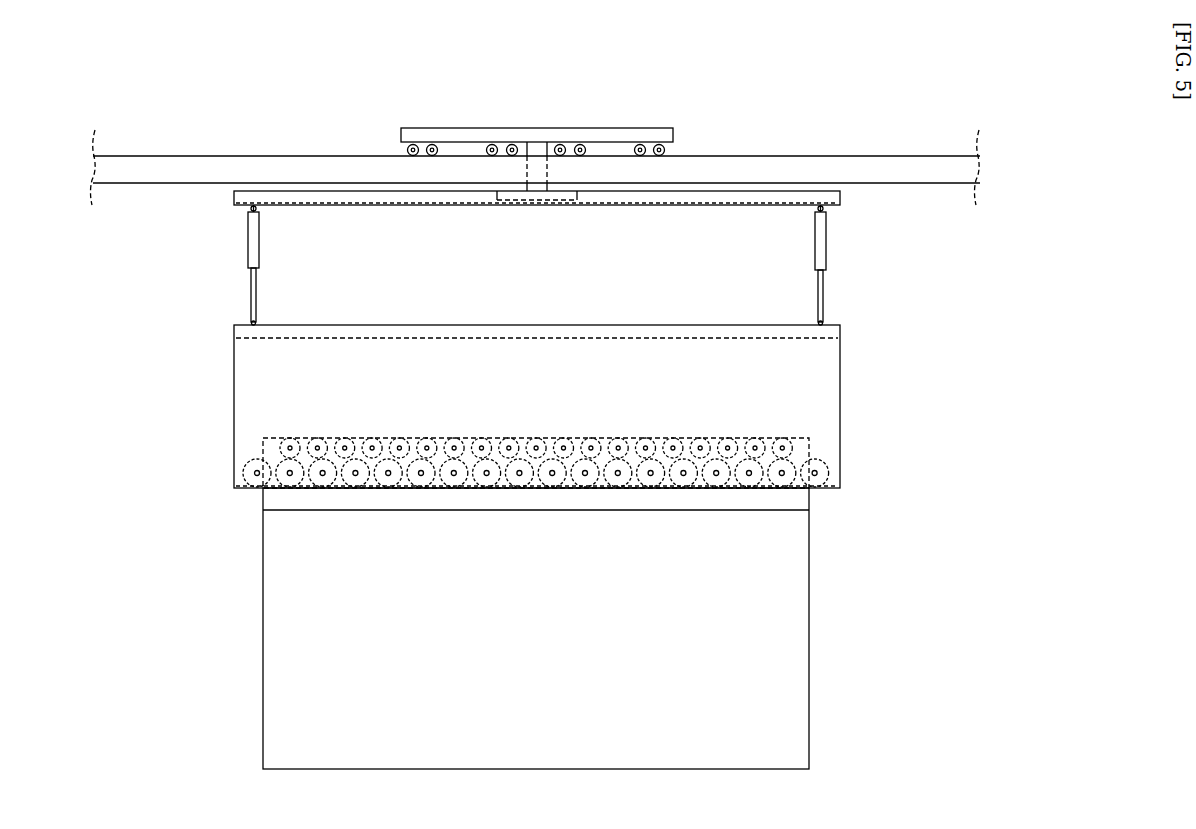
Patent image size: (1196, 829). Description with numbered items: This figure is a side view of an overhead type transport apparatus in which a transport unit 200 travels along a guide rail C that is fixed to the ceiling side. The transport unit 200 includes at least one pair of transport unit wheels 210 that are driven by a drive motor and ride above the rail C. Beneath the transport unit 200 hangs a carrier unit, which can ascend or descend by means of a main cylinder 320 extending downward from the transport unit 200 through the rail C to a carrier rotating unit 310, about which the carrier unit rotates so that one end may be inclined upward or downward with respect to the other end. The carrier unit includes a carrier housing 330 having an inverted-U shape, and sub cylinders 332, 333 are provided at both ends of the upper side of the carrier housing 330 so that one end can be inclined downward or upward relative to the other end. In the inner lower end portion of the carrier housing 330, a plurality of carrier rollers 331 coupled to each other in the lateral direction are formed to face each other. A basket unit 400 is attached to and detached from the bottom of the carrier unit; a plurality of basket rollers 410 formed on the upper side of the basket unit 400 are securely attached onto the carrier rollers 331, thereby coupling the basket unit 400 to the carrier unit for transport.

The conveyor rail C is at (822, 168).
The transport unit 200 is at (536, 128).
The transport unit wheels 210 is at (415, 145).
The main cylinder 320 is at (549, 164).
The carrier rotating unit 310 is at (578, 193).
The sub cylinder 332 is at (248, 239).
The sub cylinder 333 is at (826, 293).
The carrier housing 330 is at (234, 406).
The basket rollers 410 is at (793, 449).
The carrier rollers 331 is at (829, 473).
The basket unit 400 is at (809, 604).